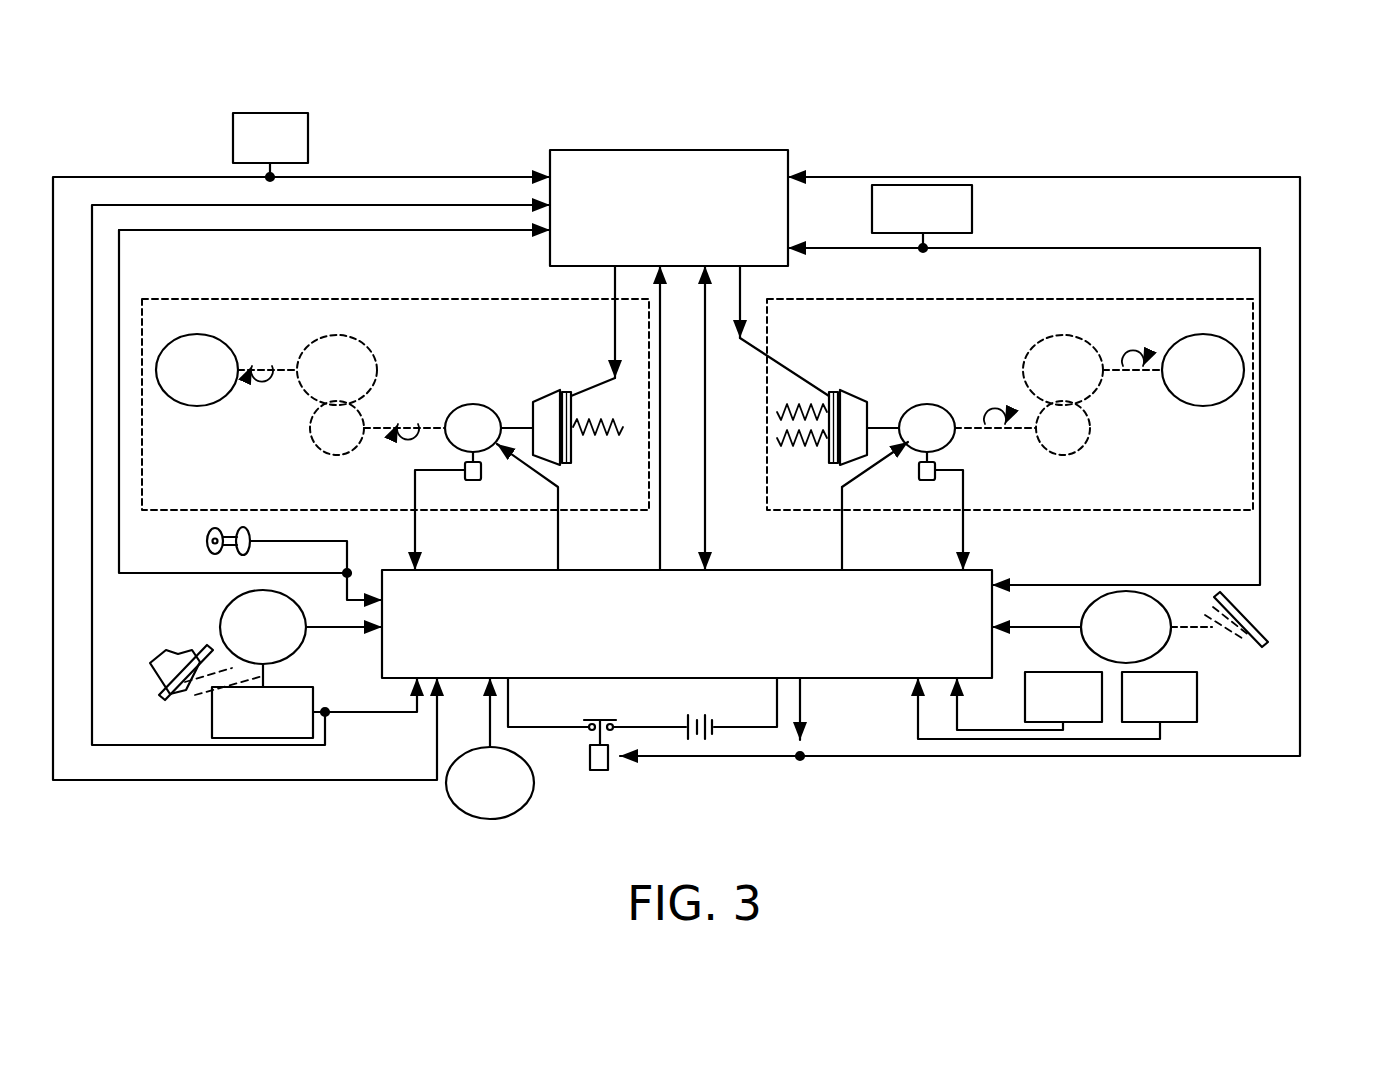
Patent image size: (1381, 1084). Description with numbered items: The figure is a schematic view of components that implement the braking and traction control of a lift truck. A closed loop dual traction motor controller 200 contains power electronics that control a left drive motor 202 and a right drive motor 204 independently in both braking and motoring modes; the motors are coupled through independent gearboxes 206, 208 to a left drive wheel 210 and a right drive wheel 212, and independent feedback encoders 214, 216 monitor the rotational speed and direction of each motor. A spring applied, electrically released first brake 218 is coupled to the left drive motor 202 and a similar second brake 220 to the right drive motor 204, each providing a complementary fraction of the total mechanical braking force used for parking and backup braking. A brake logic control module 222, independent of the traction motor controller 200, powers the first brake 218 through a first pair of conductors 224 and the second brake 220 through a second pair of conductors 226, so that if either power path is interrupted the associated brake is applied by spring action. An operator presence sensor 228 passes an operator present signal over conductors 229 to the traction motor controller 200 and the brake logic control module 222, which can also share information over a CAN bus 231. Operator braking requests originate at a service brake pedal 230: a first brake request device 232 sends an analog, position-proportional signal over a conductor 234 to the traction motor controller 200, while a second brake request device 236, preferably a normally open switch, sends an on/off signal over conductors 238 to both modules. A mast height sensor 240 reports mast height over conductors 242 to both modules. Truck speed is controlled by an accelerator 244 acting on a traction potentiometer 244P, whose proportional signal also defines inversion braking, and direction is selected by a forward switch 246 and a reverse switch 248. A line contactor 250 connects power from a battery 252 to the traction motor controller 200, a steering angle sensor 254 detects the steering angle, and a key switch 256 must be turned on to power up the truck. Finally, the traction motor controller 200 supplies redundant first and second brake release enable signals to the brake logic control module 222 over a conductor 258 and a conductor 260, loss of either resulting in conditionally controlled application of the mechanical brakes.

The traction motor controller 200 is at (477, 552).
The left drive motor 202 is at (478, 404).
The right drive motor 204 is at (925, 404).
The gearbox 206 is at (440, 333).
The gearbox 208 is at (1008, 372).
The left drive wheel 210 is at (197, 406).
The right drive wheel 212 is at (1203, 406).
The feedback encoder 214 is at (481, 475).
The feedback encoder 216 is at (935, 468).
The first brake 218 is at (595, 448).
The second brake 220 is at (798, 462).
The brake logic control module 222 is at (788, 160).
The first pair of conductors 224 is at (615, 332).
The second pair of conductors 226 is at (740, 307).
The operator presence sensor 228 is at (972, 210).
The conductors 229 is at (1133, 248).
The service brake pedal 230 is at (150, 690).
The CAN bus 231 is at (705, 535).
The first brake request device 232 is at (220, 627).
The conductor 234 is at (343, 630).
The second brake request device 236 is at (227, 738).
The conductors 238 is at (145, 205).
The mast height sensor 240 is at (308, 142).
The conductors 242 is at (430, 177).
The accelerator 244 is at (1247, 620).
The traction potentiometer 244P is at (1157, 592).
The forward switch 246 is at (1085, 730).
The reverse switch 248 is at (1178, 739).
The line contactor 250 is at (600, 770).
The battery 252 is at (700, 745).
The steering angle sensor 254 is at (533, 800).
The key switch 256 is at (208, 541).
The conductor 258 is at (660, 548).
The conductor 260 is at (1183, 177).